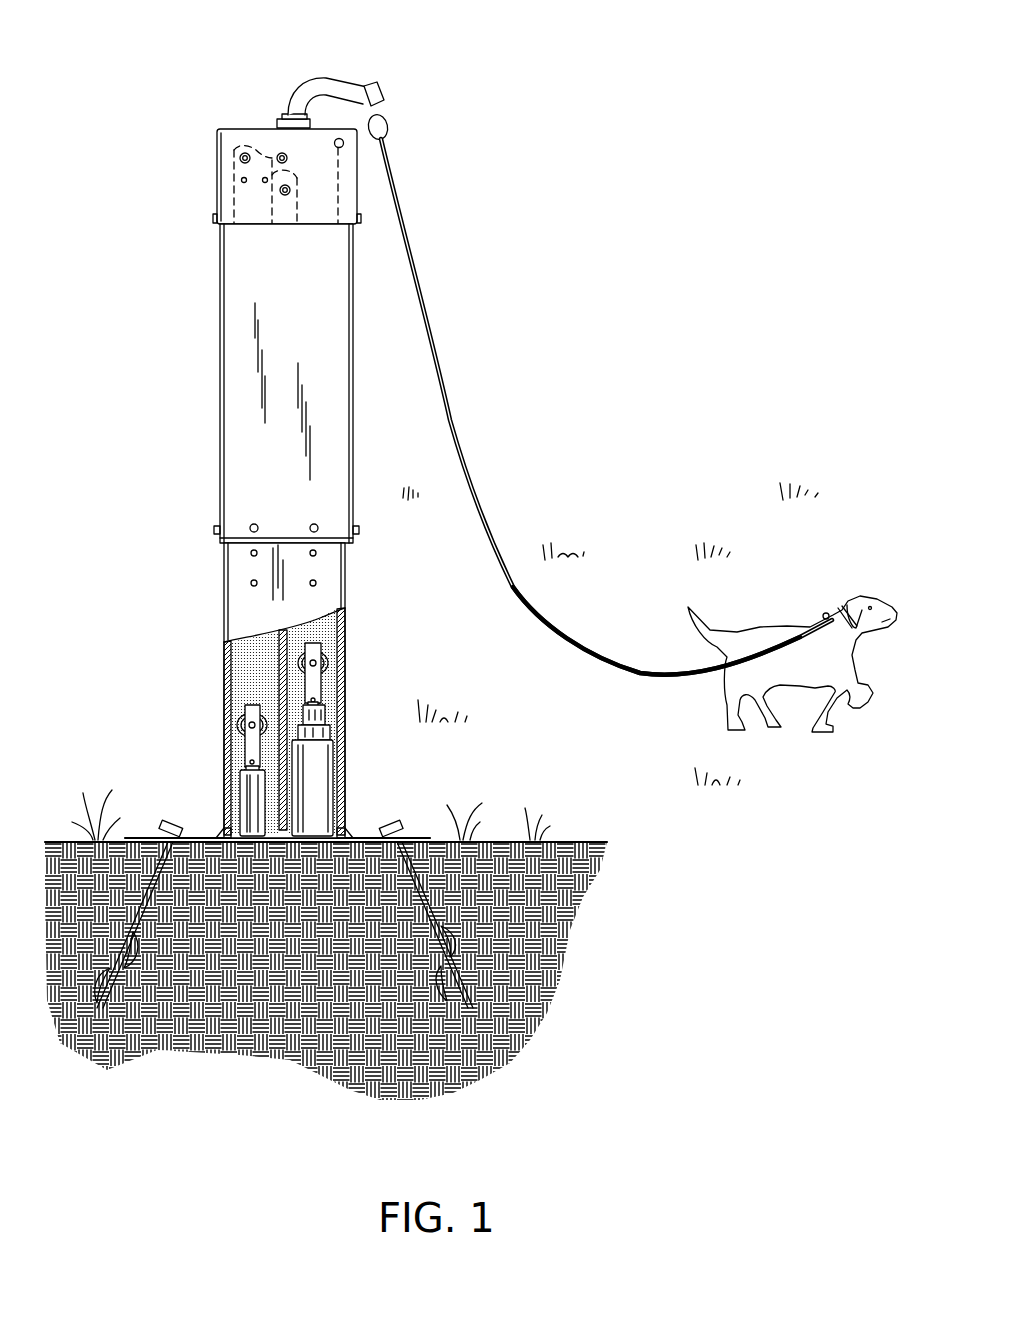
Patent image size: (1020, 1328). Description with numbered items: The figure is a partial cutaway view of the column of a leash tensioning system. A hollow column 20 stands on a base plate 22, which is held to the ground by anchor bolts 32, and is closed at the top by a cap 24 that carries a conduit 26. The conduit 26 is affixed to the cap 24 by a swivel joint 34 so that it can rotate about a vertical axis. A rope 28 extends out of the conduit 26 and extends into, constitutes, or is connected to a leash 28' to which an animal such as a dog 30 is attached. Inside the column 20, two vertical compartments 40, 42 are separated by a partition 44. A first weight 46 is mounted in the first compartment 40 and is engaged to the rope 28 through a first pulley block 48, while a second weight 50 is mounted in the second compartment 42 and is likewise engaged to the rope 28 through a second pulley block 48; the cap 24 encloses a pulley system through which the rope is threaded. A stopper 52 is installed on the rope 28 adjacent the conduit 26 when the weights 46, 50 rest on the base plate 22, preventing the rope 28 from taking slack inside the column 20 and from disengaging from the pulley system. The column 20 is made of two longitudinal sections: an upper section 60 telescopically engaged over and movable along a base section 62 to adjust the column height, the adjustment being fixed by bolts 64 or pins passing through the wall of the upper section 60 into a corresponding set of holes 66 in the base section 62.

The hollow column 20 is at (576, 181).
The base plate 22 is at (143, 838).
The cap 24 is at (216, 173).
The conduit 26 is at (322, 78).
The rope 28 is at (460, 411).
The leash 28' is at (656, 659).
The dog 30 is at (786, 625).
The anchor bolts 32 is at (178, 825).
The swivel joint 34 is at (278, 118).
The first compartment 40 is at (250, 659).
The second compartment 42 is at (315, 634).
The partition 44 is at (325, 682).
The first weight 46 is at (240, 780).
The first pulley block 48 is at (240, 718).
The second weight 50 is at (330, 790).
The stopper 52 is at (388, 120).
The upper section 60 is at (219, 334).
The base section 62 is at (225, 592).
The bolts 64 is at (254, 524).
The holes 66 is at (251, 553).